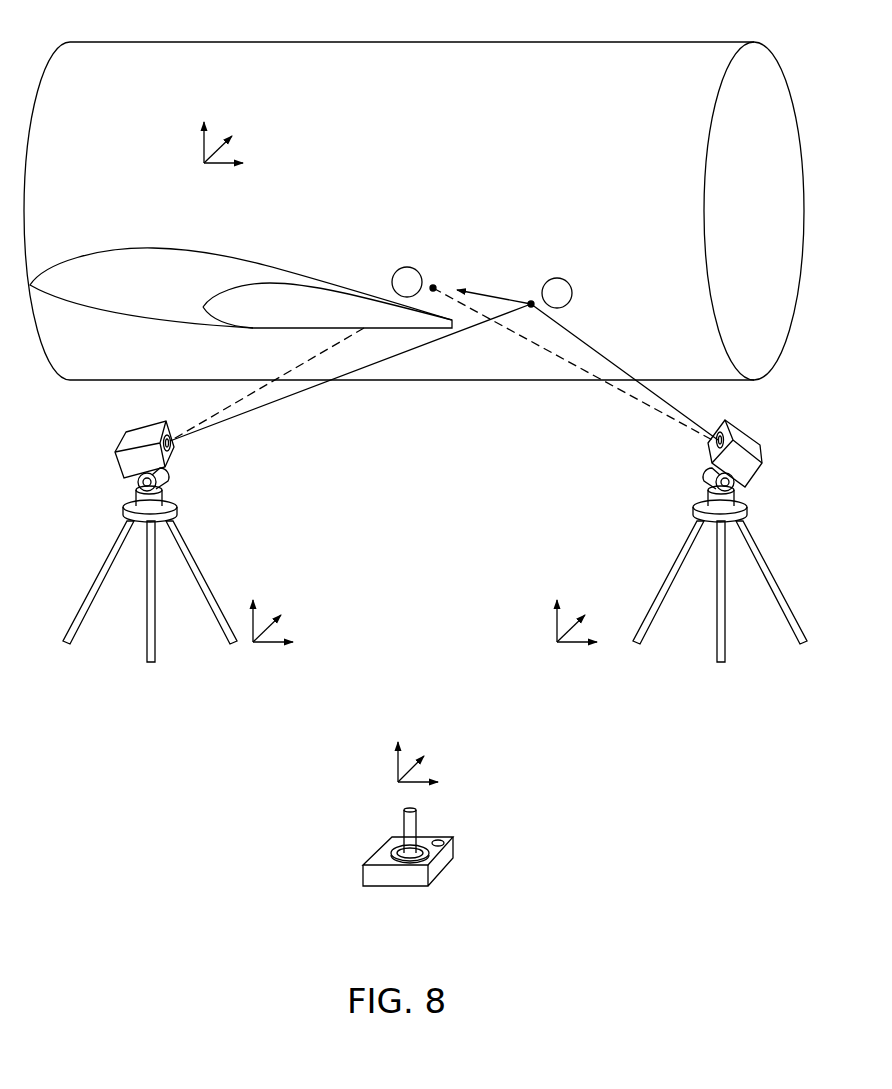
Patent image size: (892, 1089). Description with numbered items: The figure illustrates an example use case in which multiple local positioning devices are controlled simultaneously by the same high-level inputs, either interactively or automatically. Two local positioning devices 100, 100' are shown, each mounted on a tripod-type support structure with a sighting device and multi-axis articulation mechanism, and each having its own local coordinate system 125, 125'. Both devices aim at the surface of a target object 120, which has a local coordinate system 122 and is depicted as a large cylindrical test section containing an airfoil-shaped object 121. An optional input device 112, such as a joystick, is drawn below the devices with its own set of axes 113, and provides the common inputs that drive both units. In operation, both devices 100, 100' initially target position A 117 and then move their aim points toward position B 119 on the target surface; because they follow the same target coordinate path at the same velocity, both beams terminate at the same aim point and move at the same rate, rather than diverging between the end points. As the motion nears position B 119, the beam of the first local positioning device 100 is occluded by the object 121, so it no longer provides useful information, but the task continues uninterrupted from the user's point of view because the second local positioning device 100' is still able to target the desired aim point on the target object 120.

The target object 120 is at (631, 48).
The object 121 is at (140, 321).
The local coordinate system 122 is at (204, 166).
The position 'B' 119 is at (435, 284).
The position 'A' 117 is at (530, 300).
The local positioning system 100 is at (178, 563).
The local positioning device 100' is at (694, 563).
The local coordinate system 125 is at (272, 629).
The local coordinate system 125' is at (574, 629).
The target coordinate system 113 is at (396, 782).
The input device 112 is at (378, 852).